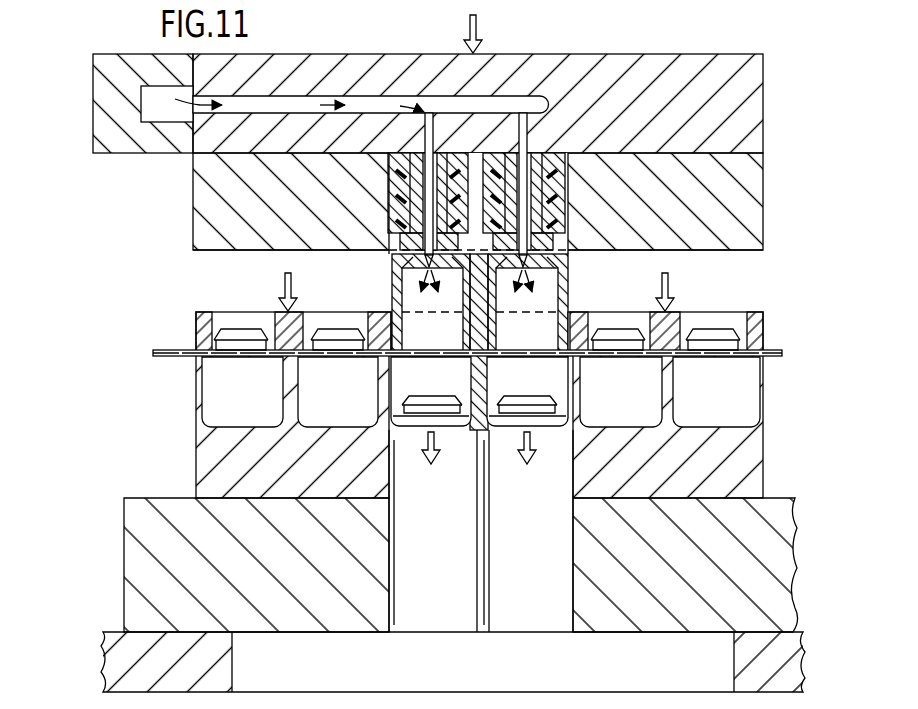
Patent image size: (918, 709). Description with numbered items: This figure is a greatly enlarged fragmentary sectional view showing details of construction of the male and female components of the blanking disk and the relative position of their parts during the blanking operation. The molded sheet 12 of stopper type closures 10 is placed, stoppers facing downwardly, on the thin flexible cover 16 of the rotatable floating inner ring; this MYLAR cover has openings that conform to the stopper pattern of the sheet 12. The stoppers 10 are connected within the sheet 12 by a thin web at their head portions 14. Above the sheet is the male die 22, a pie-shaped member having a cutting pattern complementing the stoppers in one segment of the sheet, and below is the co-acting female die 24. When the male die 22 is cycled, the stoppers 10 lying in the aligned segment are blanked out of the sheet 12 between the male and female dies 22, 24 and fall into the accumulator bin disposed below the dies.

The stopper type closure 10 is at (455, 430).
The disk-like sheet 12 is at (176, 350).
The head portion 14 is at (240, 358).
The thin flexible cover 16 is at (162, 358).
The male die 22 is at (193, 197).
The female die 24 is at (196, 458).